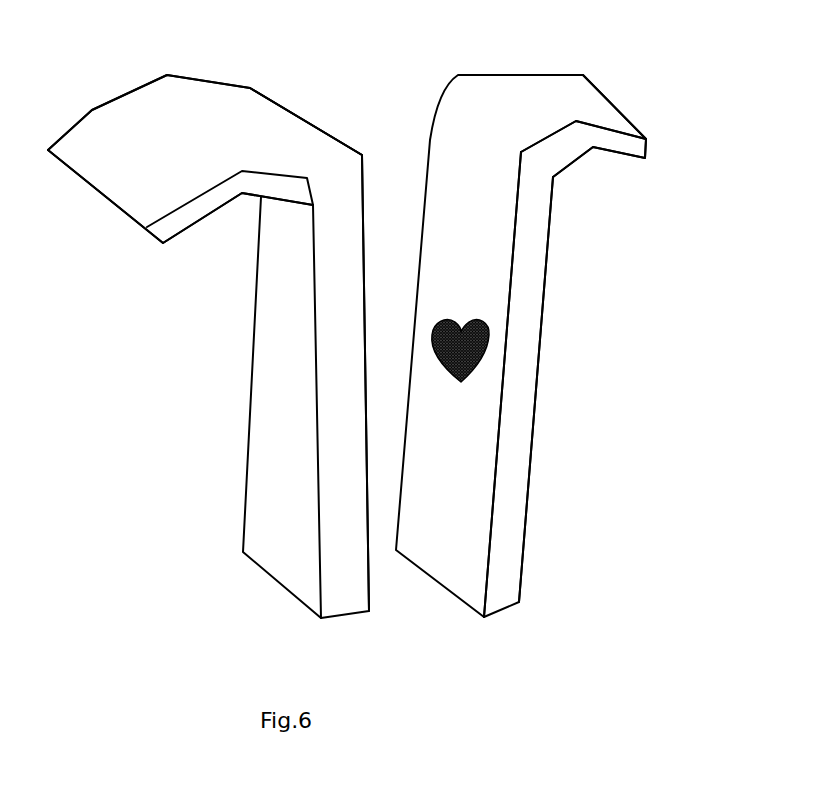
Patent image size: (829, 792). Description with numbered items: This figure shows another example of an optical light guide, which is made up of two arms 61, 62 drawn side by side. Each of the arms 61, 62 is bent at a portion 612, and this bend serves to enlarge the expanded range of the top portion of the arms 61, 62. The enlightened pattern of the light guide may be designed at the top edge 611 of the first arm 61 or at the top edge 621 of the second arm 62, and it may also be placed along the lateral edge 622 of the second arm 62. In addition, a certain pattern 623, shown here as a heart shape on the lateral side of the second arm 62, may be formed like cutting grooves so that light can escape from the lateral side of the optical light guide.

The arm 61 is at (263, 518).
The top edge 611 is at (120, 210).
The bent portion 612 is at (308, 138).
The arm 62 is at (510, 525).
The top edge 621 is at (625, 118).
The lateral edge 622 is at (528, 368).
The pattern 623 is at (470, 367).